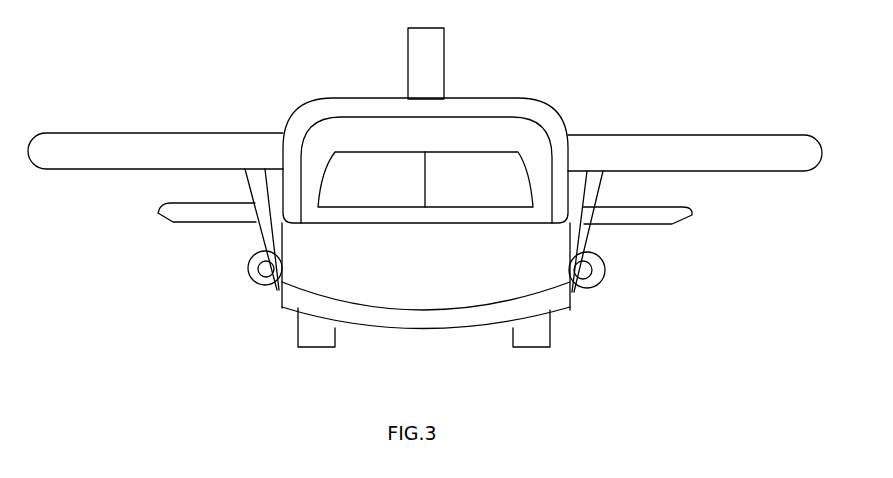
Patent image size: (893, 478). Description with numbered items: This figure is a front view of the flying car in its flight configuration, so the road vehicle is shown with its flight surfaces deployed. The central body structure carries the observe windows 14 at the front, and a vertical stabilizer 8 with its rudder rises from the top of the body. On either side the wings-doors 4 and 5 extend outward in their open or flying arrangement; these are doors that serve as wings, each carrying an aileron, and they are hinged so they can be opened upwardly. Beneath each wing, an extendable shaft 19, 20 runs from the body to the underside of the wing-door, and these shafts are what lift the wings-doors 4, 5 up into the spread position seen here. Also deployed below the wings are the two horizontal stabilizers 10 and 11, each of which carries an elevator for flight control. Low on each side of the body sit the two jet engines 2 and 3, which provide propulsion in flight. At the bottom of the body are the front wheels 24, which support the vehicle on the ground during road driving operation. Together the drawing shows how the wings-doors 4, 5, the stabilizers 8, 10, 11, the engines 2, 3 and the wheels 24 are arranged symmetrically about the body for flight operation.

The jet engine 2 is at (605, 278).
The jet engine 3 is at (247, 272).
The wings-door 4 is at (715, 135).
The wings-door 5 is at (228, 152).
The vertical stabilizer 8 is at (427, 62).
The horizontal stabilizer 10 is at (662, 225).
The horizontal stabilizer 11 is at (173, 222).
The observe windows 14 is at (372, 170).
The extendable shaft 19 is at (603, 188).
The extendable shaft 20 is at (245, 187).
The front wheels 24 is at (525, 347).